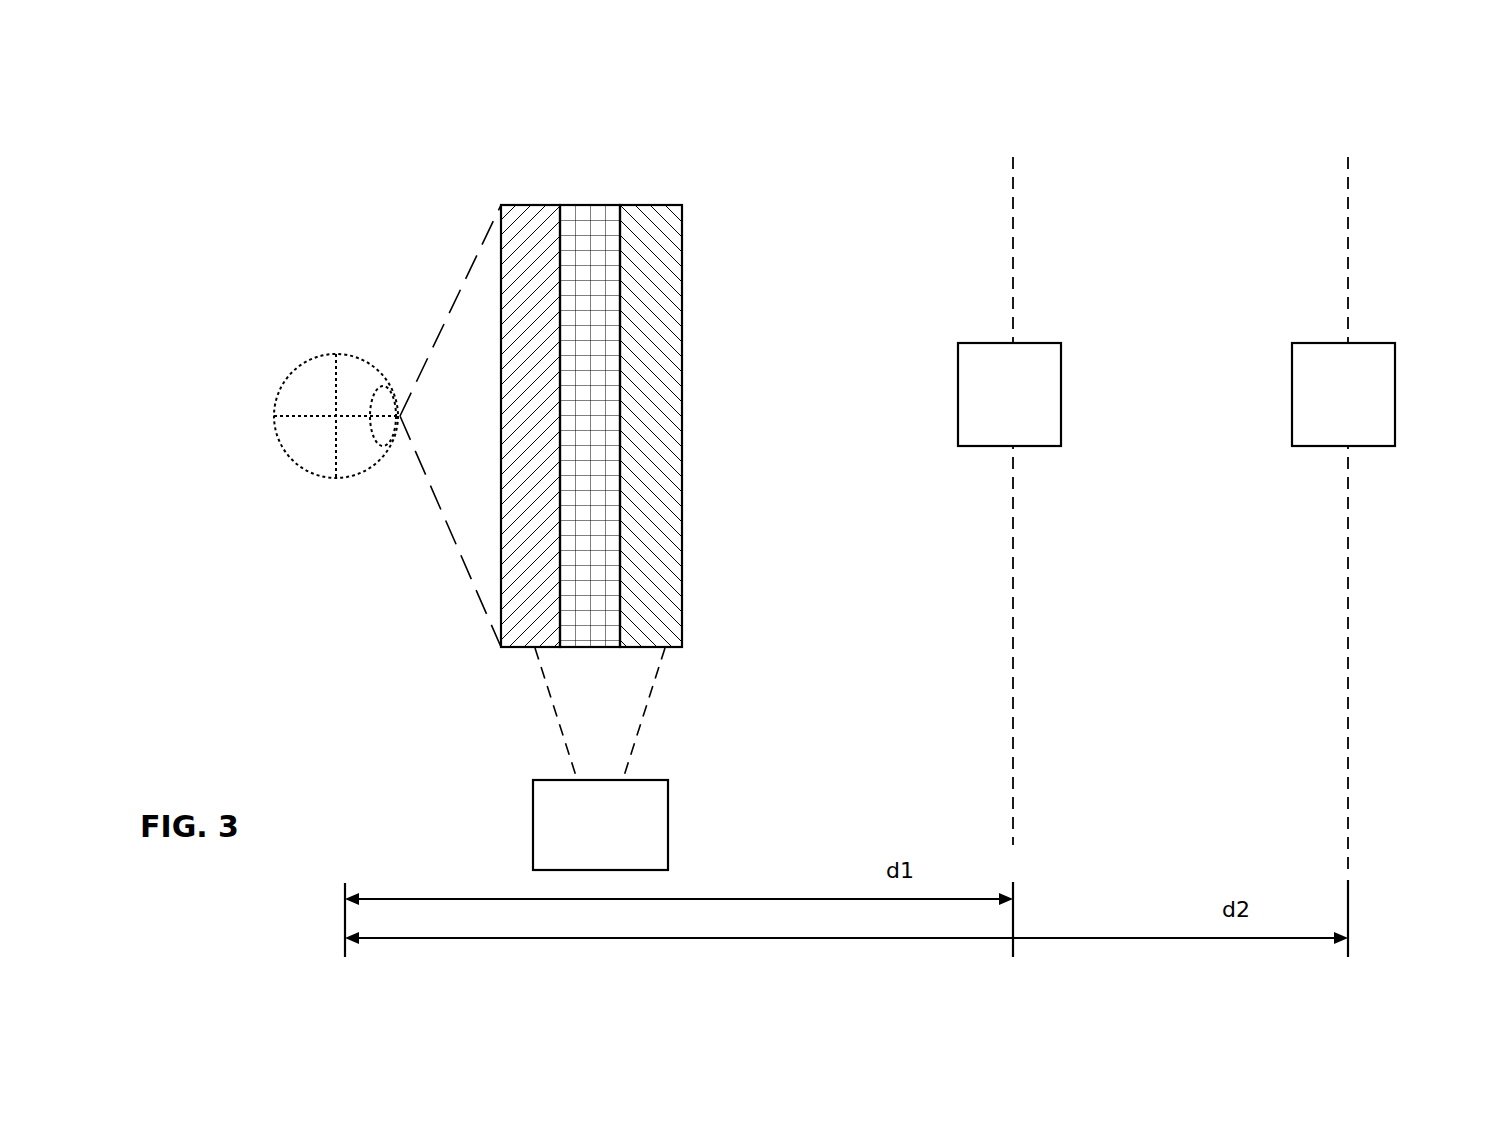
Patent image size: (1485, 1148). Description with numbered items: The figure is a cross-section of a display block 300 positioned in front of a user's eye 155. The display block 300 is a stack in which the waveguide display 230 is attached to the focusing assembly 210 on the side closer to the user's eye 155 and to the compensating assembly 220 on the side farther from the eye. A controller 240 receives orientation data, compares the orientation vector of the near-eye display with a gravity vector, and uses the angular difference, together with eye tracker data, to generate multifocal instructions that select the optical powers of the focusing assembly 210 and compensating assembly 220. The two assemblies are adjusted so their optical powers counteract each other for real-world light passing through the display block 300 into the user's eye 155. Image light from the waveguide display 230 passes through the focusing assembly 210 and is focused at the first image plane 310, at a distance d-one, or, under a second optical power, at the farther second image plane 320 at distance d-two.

The display block 300 is at (520, 463).
The user's eye 155 is at (300, 365).
The focusing assembly 210 is at (520, 573).
The compensating assembly 220 is at (653, 332).
The waveguide display 230 is at (593, 227).
The controller 240 is at (600, 825).
The first image plane 310 is at (1007, 500).
The second image plane 320 is at (1330, 500).